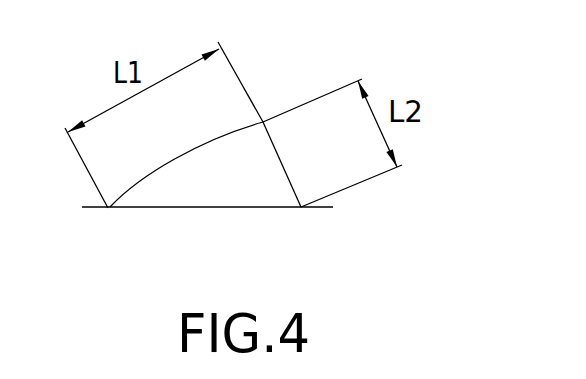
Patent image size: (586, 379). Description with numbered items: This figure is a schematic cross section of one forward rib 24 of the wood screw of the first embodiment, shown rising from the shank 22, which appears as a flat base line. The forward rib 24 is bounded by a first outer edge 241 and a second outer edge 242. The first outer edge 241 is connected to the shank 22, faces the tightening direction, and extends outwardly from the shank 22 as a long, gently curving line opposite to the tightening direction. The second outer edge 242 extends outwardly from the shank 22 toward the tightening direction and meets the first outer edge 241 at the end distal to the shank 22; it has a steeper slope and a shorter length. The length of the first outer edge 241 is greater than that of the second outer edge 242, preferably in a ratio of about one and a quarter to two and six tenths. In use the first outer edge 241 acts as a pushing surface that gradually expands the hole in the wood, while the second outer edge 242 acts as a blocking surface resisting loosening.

The shank 22 is at (175, 212).
The forward rib 24 is at (239, 103).
The first outer edge 241 is at (158, 163).
The second outer edge 242 is at (280, 148).